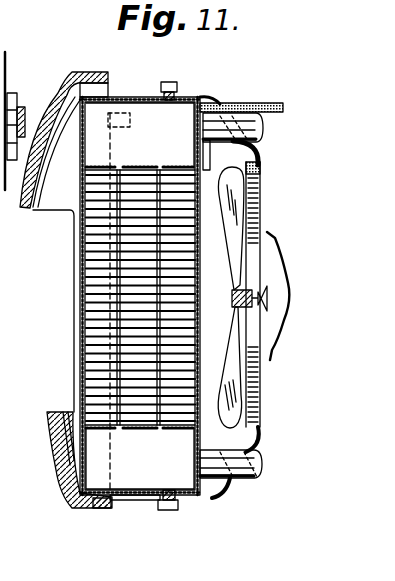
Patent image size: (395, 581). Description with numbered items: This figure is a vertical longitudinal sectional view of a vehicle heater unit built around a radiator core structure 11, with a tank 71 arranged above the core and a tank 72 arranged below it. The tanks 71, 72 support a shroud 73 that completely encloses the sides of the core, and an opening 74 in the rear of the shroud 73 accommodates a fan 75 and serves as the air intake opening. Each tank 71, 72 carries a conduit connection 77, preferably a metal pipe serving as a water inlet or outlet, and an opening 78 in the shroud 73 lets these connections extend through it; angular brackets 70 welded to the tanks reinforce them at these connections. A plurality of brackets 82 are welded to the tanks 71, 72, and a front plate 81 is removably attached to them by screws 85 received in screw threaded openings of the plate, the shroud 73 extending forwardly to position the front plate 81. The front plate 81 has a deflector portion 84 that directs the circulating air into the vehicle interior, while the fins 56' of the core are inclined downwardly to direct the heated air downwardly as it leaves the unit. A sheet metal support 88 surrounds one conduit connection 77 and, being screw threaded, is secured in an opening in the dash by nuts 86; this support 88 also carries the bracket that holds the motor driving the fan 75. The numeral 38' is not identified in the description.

The core structure 11 is at (82, 357).
The housing 38' is at (13, 324).
The fins 56' is at (81, 301).
The angular brackets 70 is at (163, 92).
The tank 71 is at (150, 107).
The tank 72 is at (113, 488).
The shroud 73 is at (234, 74).
The opening 74 is at (262, 170).
The fan 75 is at (235, 397).
The conduit connection 77 is at (262, 121).
The opening 78 is at (255, 446).
The front plate 81 is at (57, 470).
The brackets 82 is at (118, 498).
The deflector portion 84 is at (35, 214).
The screws 85 is at (117, 505).
The nuts 86 is at (20, 92).
The support 88 is at (255, 106).